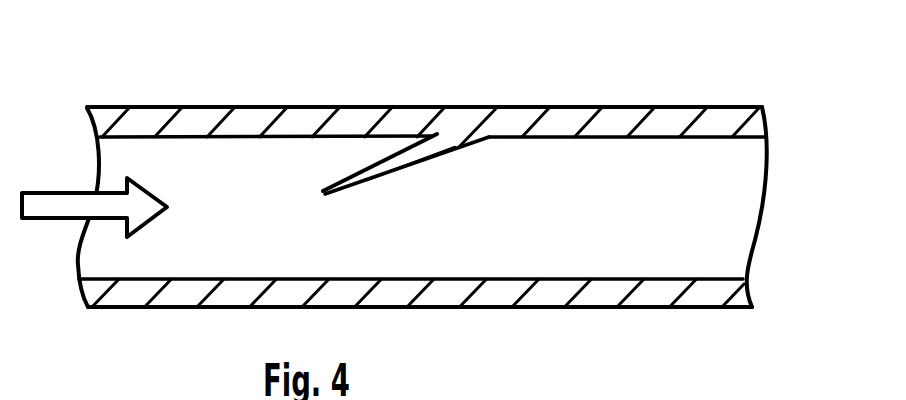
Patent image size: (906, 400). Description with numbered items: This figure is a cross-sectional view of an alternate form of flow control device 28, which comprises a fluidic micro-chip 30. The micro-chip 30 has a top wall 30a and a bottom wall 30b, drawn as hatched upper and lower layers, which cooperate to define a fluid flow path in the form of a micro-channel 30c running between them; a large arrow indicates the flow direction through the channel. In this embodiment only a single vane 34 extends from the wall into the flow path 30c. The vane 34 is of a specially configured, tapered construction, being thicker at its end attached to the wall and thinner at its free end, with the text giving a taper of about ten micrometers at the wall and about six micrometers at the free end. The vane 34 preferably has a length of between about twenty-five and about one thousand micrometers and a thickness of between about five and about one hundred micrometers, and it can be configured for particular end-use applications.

The flow control device 28 is at (299, 89).
The fluidic micro-chip 30 is at (363, 108).
The top wall 30a is at (518, 105).
The bottom wall 30b is at (537, 307).
The micro-channel 30c is at (622, 230).
The vane 34 is at (428, 163).